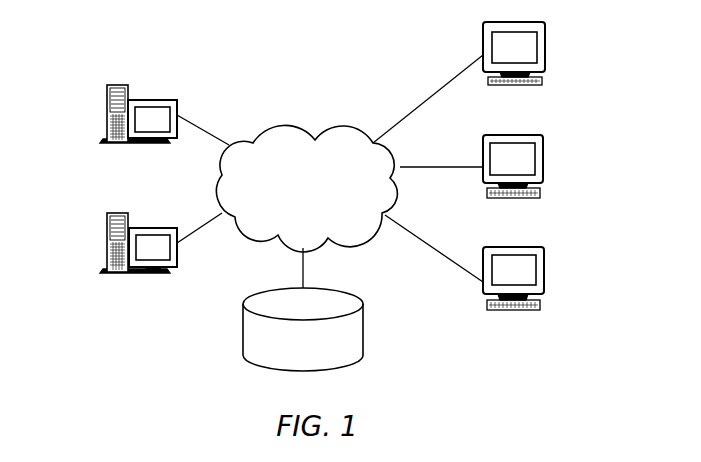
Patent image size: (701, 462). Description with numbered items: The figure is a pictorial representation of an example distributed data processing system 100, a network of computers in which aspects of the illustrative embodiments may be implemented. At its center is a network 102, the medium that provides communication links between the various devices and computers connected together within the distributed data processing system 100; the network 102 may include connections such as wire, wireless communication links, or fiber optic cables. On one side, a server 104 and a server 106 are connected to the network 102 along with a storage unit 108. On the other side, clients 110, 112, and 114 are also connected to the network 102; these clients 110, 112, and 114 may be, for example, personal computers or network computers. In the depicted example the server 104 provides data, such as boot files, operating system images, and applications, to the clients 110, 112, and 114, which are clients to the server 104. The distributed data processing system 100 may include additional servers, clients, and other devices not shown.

The distributed data processing system 100 is at (371, 57).
The network 102 is at (293, 127).
The server 104 is at (107, 115).
The server 106 is at (107, 245).
The storage unit 108 is at (243, 328).
The client 110 is at (545, 55).
The client 112 is at (543, 167).
The client 114 is at (544, 282).